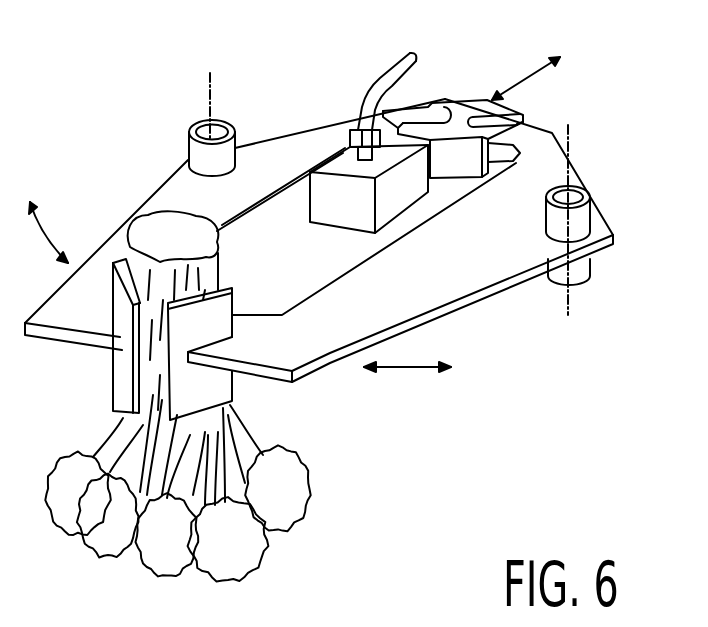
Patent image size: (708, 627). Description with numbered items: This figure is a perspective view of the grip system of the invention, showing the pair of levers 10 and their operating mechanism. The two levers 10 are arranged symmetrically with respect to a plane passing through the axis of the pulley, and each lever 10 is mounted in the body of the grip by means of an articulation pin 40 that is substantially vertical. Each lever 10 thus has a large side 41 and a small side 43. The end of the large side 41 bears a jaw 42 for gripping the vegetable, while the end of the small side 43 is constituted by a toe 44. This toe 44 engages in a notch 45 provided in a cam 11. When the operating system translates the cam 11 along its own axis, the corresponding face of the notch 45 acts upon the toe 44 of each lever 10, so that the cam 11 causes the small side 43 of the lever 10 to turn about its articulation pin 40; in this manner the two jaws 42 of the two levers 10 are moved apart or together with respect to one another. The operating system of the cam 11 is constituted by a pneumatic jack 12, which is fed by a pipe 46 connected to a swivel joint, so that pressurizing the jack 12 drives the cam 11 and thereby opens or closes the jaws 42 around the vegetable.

The lever 10 is at (270, 131).
The cam 11 is at (457, 108).
The pneumatic jack 12 is at (338, 163).
The articulation pin 40 is at (193, 153).
The large side 41 is at (165, 197).
The jaw 42 is at (115, 370).
The small side 43 is at (541, 170).
The toe 44 is at (426, 112).
The notch 45 is at (460, 112).
The pipe 46 is at (385, 72).